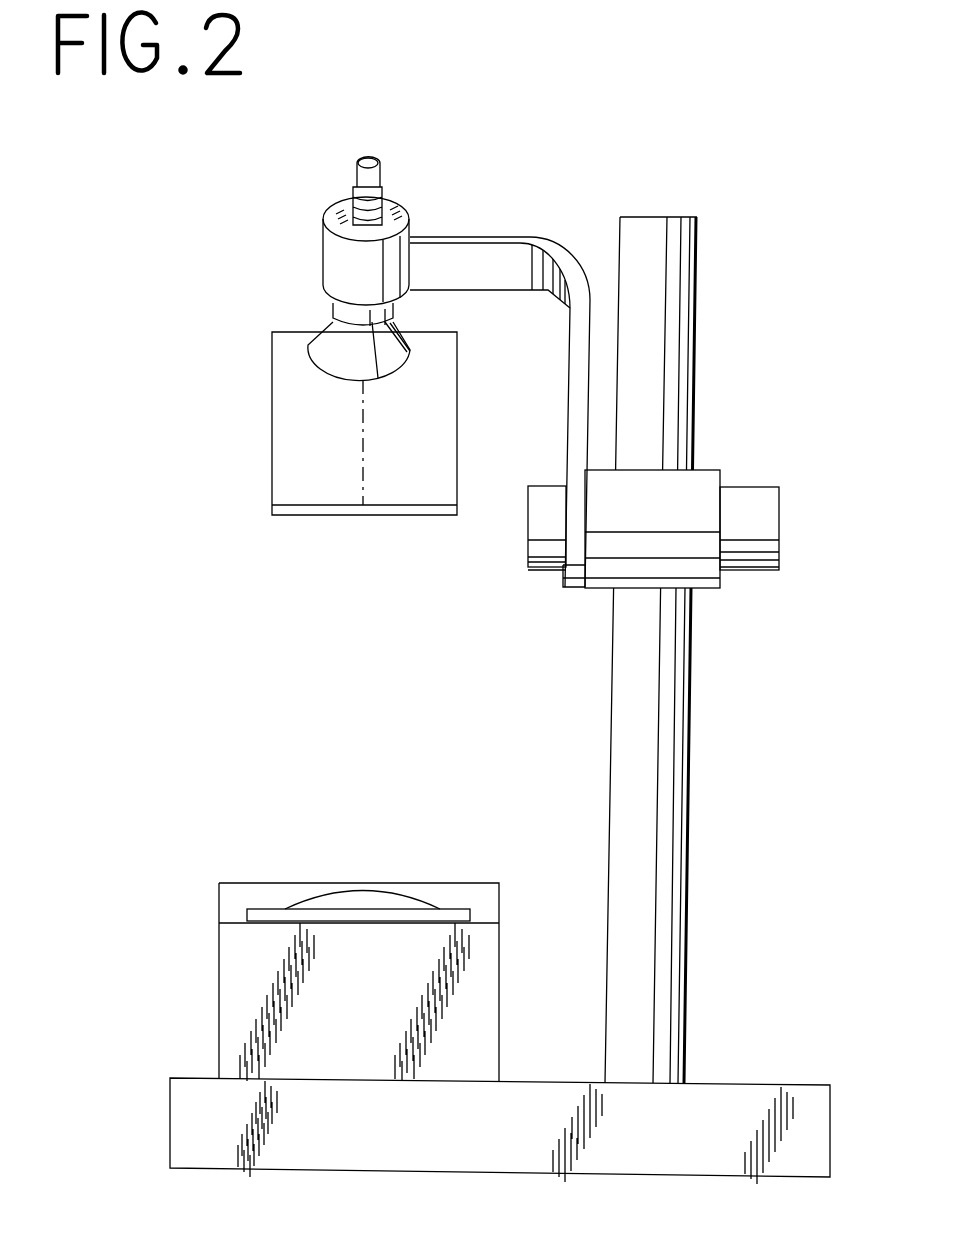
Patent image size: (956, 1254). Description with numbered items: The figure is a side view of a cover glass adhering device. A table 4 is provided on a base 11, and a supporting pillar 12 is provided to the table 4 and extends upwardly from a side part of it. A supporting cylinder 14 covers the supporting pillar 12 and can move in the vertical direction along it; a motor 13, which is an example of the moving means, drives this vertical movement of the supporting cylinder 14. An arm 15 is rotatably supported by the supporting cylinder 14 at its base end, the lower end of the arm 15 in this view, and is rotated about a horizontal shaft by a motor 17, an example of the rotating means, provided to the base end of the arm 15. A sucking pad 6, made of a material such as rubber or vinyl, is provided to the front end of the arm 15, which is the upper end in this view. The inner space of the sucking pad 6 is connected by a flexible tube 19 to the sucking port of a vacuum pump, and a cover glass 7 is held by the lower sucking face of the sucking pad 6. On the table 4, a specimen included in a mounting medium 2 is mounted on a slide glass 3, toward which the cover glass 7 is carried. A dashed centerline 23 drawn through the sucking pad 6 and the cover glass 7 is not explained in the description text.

The mounting medium 2 is at (377, 895).
The slide glass 3 is at (262, 909).
The table 4 is at (227, 958).
The sucking pad 6 is at (335, 342).
The cover glass 7 is at (307, 485).
The base 11 is at (186, 1100).
The supporting pillar 12 is at (680, 788).
The motor 13 is at (770, 525).
The supporting cylinder 14 is at (642, 478).
The arm 15 is at (580, 342).
The motor 17 is at (528, 525).
The flexible tube 19 is at (382, 178).
The optical axis 23 is at (360, 440).